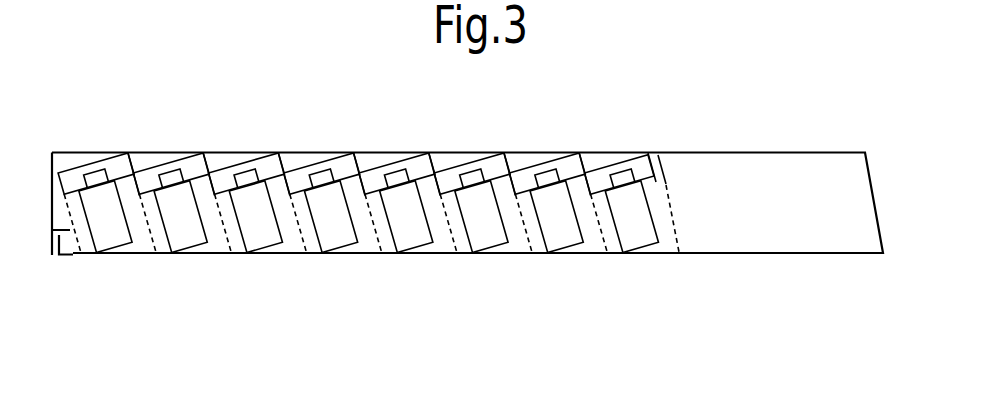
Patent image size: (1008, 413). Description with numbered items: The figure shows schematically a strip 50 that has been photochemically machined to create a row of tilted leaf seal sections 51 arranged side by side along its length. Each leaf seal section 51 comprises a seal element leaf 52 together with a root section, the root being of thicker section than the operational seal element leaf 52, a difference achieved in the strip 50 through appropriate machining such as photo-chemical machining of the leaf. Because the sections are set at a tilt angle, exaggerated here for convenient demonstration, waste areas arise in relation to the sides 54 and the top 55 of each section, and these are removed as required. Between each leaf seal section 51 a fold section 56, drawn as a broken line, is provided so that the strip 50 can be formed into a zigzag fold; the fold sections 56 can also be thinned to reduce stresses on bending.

The strip 50 is at (835, 153).
The leaf seal section 51 is at (655, 168).
The seal element leaf 52 is at (108, 226).
The sides 54 is at (117, 162).
The top 55 is at (232, 152).
The fold section 56 is at (360, 198).